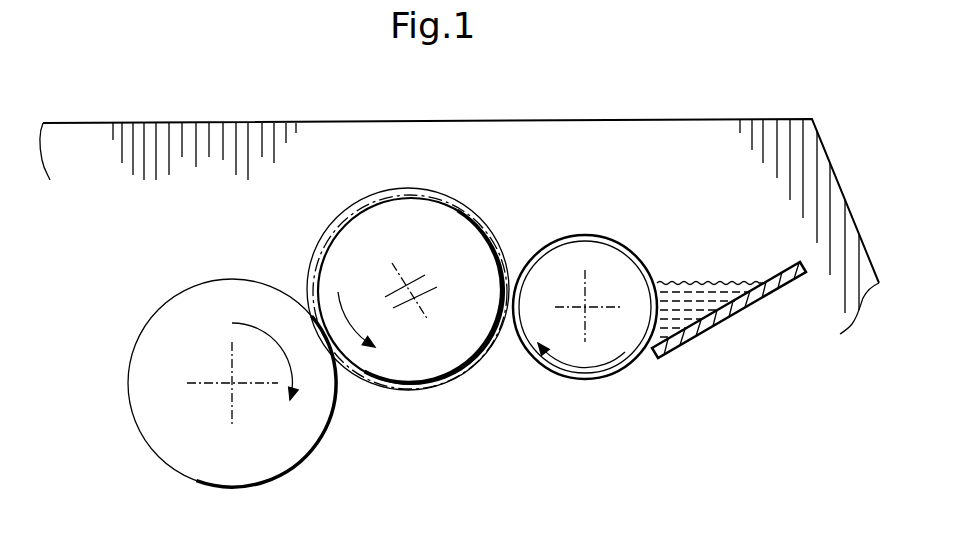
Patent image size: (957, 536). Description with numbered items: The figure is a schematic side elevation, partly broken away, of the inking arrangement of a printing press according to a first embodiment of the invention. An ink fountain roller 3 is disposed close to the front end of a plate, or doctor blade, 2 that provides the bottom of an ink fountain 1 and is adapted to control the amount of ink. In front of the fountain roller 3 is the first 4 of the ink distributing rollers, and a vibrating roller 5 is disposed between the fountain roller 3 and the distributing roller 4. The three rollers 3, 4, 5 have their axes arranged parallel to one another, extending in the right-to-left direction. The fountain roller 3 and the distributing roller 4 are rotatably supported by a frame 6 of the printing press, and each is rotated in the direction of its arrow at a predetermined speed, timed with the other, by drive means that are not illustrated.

The ink fountain 1 is at (697, 293).
The plate (doctor blade) 2 is at (733, 318).
The ink fountain roller 3 is at (587, 237).
The first ink distributing roller 4 is at (215, 280).
The vibrating roller 5 is at (362, 197).
The frame 6 is at (526, 120).